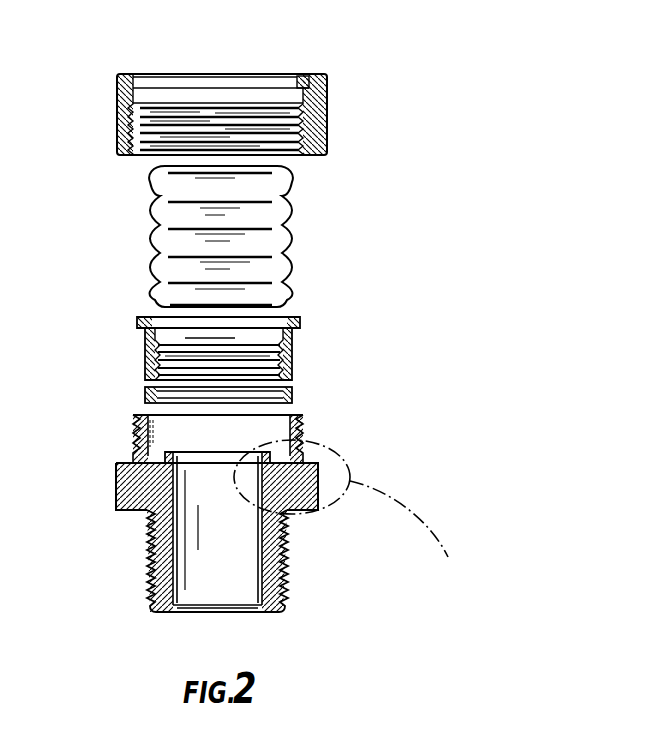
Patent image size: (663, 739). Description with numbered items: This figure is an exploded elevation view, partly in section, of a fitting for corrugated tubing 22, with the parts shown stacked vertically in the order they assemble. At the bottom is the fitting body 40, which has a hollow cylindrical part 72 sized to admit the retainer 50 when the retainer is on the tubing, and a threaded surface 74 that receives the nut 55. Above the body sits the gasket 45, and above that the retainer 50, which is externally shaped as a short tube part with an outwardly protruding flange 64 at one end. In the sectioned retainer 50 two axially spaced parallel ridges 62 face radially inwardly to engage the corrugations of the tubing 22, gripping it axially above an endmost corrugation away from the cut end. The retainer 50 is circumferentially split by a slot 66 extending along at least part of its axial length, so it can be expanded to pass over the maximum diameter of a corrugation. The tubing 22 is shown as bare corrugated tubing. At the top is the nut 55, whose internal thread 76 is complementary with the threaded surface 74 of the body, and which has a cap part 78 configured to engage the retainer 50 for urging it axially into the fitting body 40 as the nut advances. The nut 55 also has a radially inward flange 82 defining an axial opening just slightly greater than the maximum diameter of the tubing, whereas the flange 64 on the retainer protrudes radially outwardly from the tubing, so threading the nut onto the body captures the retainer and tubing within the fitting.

The tubing 22 is at (285, 238).
The fitting body 40 is at (268, 513).
The gasket 45 is at (145, 393).
The retainer 50 is at (233, 337).
The nut 55 is at (265, 87).
The ridges 62 is at (292, 380).
The flange 64 is at (137, 323).
The slot 66 is at (222, 368).
The hollow cylindrical part 72 is at (178, 433).
The threaded surface 74 is at (300, 421).
The internal threads of cap 76 is at (207, 113).
The cap part 78 is at (322, 78).
The radially inward flange 82 is at (303, 82).